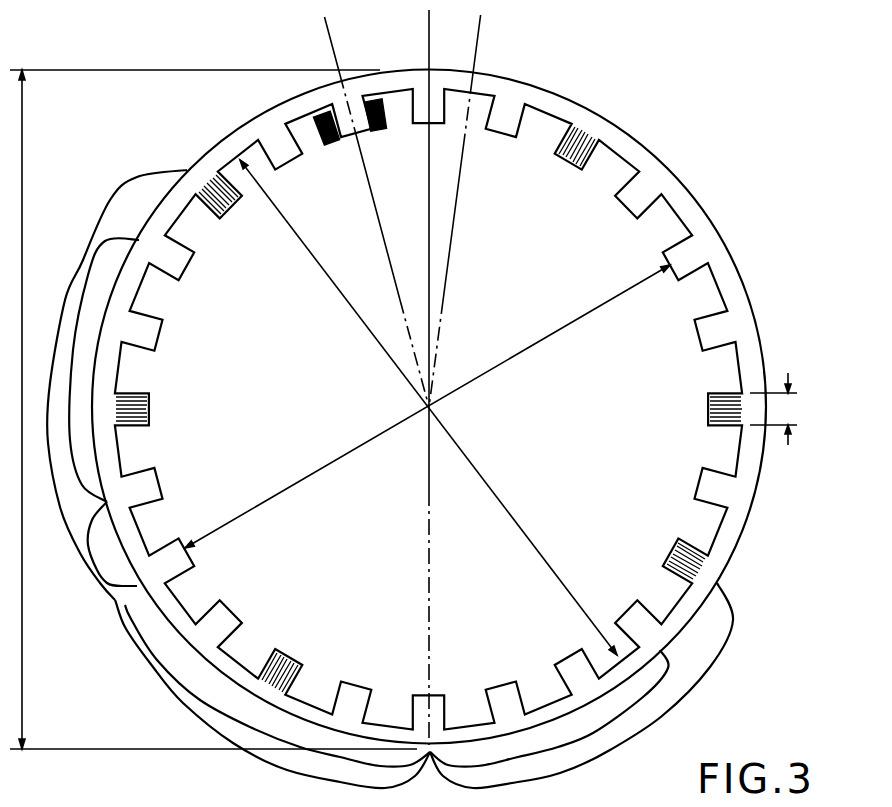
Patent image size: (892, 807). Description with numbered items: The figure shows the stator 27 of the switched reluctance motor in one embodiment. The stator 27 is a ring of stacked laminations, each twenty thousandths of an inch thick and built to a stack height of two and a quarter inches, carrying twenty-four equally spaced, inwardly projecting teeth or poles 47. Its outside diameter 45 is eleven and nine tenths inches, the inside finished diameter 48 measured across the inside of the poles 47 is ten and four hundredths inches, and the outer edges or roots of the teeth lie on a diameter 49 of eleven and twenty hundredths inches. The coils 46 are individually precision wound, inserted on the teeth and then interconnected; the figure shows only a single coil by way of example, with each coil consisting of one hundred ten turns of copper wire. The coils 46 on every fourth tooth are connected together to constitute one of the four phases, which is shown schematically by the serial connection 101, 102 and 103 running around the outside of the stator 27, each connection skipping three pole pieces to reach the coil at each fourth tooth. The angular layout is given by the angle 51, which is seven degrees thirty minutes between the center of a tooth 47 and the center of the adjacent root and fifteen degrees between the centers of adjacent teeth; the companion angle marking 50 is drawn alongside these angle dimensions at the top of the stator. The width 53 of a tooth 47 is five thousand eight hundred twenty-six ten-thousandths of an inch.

The stator 27 is at (676, 174).
The outside diameter 45 is at (22, 222).
The coils 46 is at (376, 130).
The poles 47 is at (336, 142).
The inside finished diameter 48 is at (270, 503).
The root diameter 49 is at (313, 257).
The tooth pitch angle 50 is at (327, 36).
The angle 51 is at (426, 30).
The width 53 is at (776, 410).
The connection 101 is at (142, 177).
The connection 102 is at (172, 690).
The connection 103 is at (603, 735).